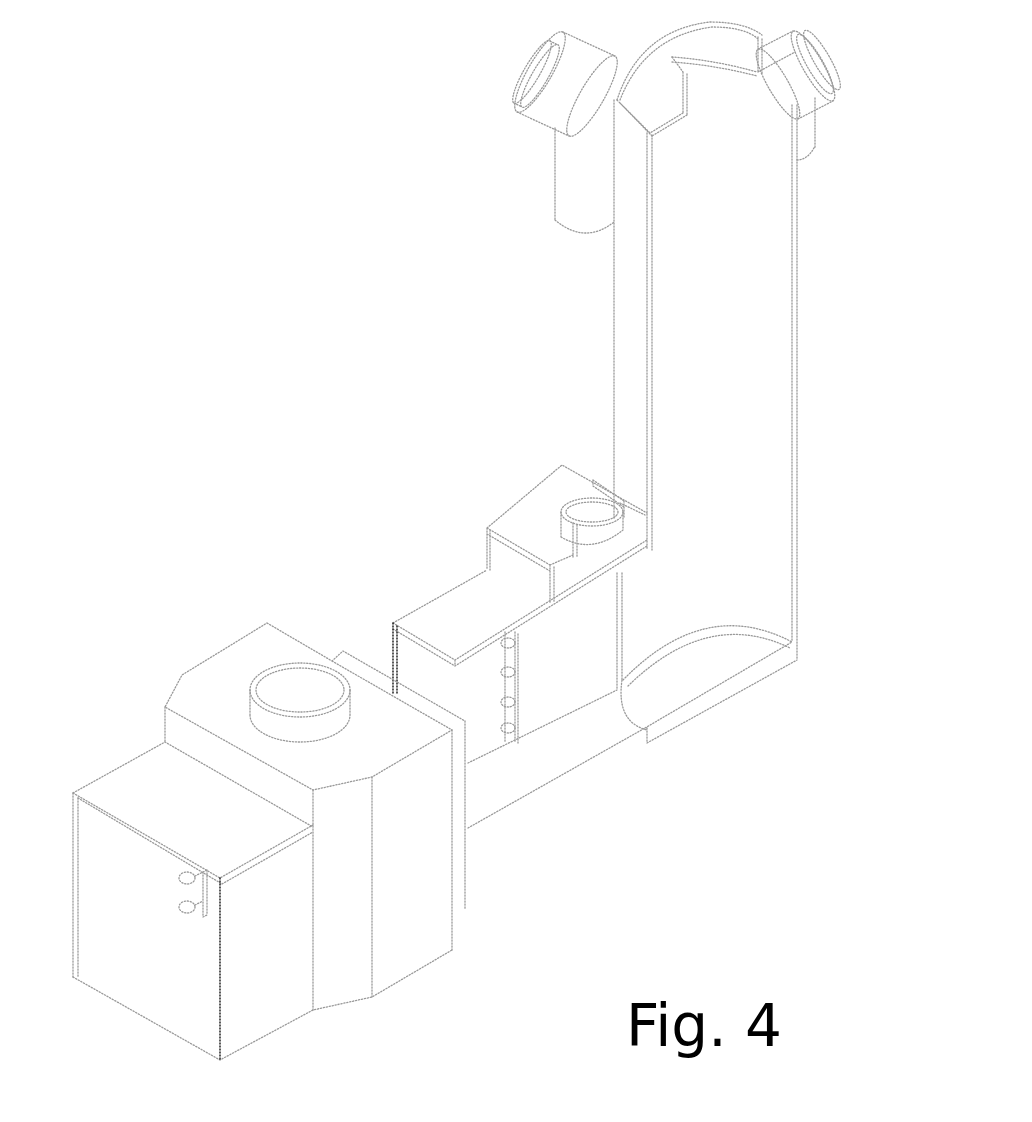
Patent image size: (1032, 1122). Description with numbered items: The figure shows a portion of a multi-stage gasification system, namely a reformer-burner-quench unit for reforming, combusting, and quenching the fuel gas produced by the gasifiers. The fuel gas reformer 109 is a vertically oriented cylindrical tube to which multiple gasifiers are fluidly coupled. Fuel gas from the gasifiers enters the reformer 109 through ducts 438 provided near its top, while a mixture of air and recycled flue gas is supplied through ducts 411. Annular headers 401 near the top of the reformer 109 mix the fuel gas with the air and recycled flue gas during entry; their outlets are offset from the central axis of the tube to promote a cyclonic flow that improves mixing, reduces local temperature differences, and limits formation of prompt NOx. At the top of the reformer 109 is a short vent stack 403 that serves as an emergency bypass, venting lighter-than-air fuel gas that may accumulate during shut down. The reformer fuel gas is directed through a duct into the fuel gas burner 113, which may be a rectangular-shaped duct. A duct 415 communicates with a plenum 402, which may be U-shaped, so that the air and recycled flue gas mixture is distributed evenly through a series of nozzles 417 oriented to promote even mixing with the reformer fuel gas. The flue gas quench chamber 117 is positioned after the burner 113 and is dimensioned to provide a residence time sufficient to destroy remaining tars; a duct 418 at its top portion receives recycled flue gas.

The fuel gas reformer 109 is at (747, 382).
The short vent stack 403 is at (700, 42).
The annular header 401 is at (528, 122).
The duct 438 is at (518, 58).
The duct 411 is at (550, 193).
The plenum 402 is at (593, 557).
The duct 415 is at (582, 517).
The fuel gas burner 113 is at (468, 613).
The flue gas quench chamber 117 is at (155, 798).
The duct 418 is at (288, 700).
The nozzle 417 is at (512, 642).